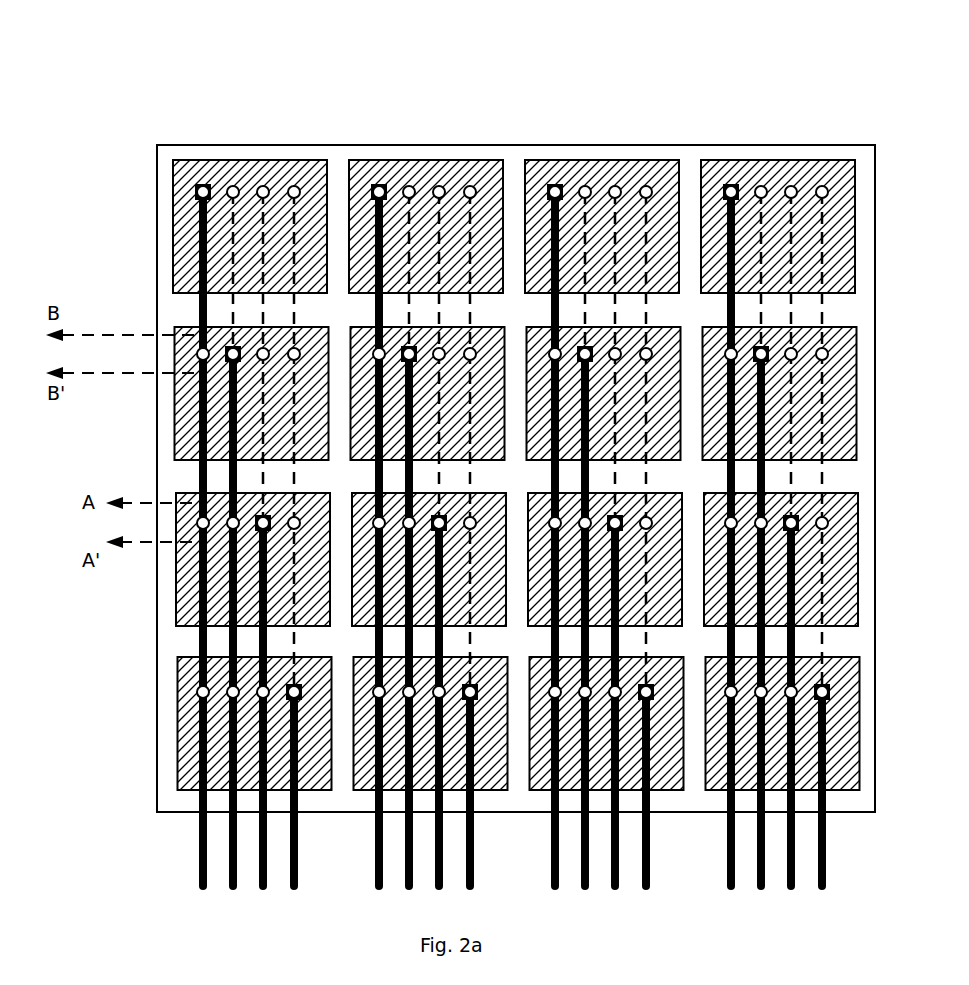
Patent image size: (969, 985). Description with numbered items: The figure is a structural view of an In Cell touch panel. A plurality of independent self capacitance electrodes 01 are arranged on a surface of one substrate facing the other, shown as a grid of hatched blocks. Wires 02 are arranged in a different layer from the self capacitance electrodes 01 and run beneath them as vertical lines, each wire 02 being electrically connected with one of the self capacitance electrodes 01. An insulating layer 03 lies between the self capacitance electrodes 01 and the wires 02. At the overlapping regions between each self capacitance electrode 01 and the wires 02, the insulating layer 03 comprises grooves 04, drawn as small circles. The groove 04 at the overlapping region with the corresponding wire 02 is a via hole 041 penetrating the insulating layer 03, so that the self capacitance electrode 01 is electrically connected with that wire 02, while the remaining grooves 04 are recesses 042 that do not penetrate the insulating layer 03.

The self capacitance electrode 01 is at (276, 160).
The wire 02 is at (200, 303).
The insulating layer 03 is at (636, 145).
The groove 04 is at (476, 106).
The via hole 041 is at (382, 160).
The recess 042 is at (520, 131).